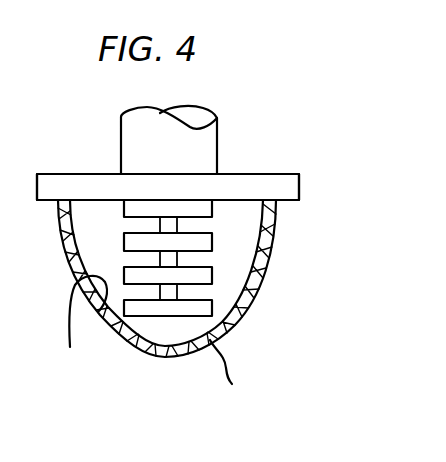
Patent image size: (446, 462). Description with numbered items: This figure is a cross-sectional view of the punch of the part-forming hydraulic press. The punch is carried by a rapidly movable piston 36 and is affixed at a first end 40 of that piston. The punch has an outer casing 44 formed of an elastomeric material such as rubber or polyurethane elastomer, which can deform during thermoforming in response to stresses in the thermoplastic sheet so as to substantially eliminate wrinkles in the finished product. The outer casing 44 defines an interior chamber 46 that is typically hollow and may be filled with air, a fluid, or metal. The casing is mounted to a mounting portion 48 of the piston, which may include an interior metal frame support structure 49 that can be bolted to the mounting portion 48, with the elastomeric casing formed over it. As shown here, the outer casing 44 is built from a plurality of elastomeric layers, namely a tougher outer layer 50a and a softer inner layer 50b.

The rapidly movable piston 36 is at (217, 147).
The first end 40 is at (118, 174).
The outer casing 44 is at (205, 254).
The interior chamber 46 is at (93, 232).
The mounting portion 48 is at (299, 188).
The interior metal frame support structure 49 is at (212, 273).
The tougher outer layer 50a is at (226, 375).
The softer inner layer 50b is at (81, 325).